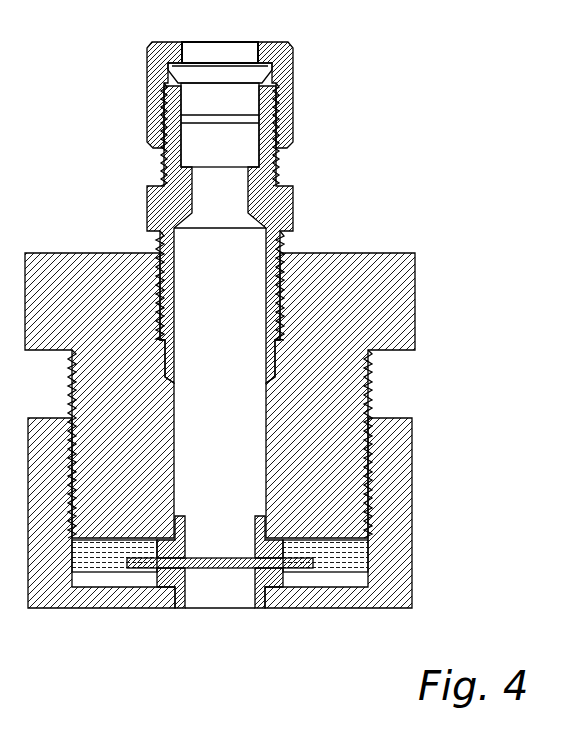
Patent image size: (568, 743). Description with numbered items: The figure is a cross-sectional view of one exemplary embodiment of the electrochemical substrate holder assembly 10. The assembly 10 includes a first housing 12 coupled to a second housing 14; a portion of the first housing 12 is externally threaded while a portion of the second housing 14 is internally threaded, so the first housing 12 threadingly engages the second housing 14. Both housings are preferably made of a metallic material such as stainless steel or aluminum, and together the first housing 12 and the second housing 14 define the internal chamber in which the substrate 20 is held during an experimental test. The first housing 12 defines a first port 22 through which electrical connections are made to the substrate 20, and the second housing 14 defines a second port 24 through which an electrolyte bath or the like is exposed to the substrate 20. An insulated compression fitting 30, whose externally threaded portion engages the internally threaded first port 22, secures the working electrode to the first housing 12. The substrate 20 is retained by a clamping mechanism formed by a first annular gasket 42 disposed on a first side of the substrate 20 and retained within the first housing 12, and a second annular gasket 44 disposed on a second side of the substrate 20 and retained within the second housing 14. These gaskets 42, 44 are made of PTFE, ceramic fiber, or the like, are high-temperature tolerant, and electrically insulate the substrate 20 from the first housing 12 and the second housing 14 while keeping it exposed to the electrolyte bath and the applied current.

The electrochemical substrate holder assembly 10 is at (352, 166).
The first housing 12 is at (415, 295).
The second housing 14 is at (412, 515).
The substrate 20 is at (213, 570).
The first port 22 is at (232, 272).
The second port 24 is at (226, 618).
The insulated compression fitting 30 is at (293, 68).
The first annular gasket 42 is at (285, 545).
The second annular gasket 44 is at (268, 600).